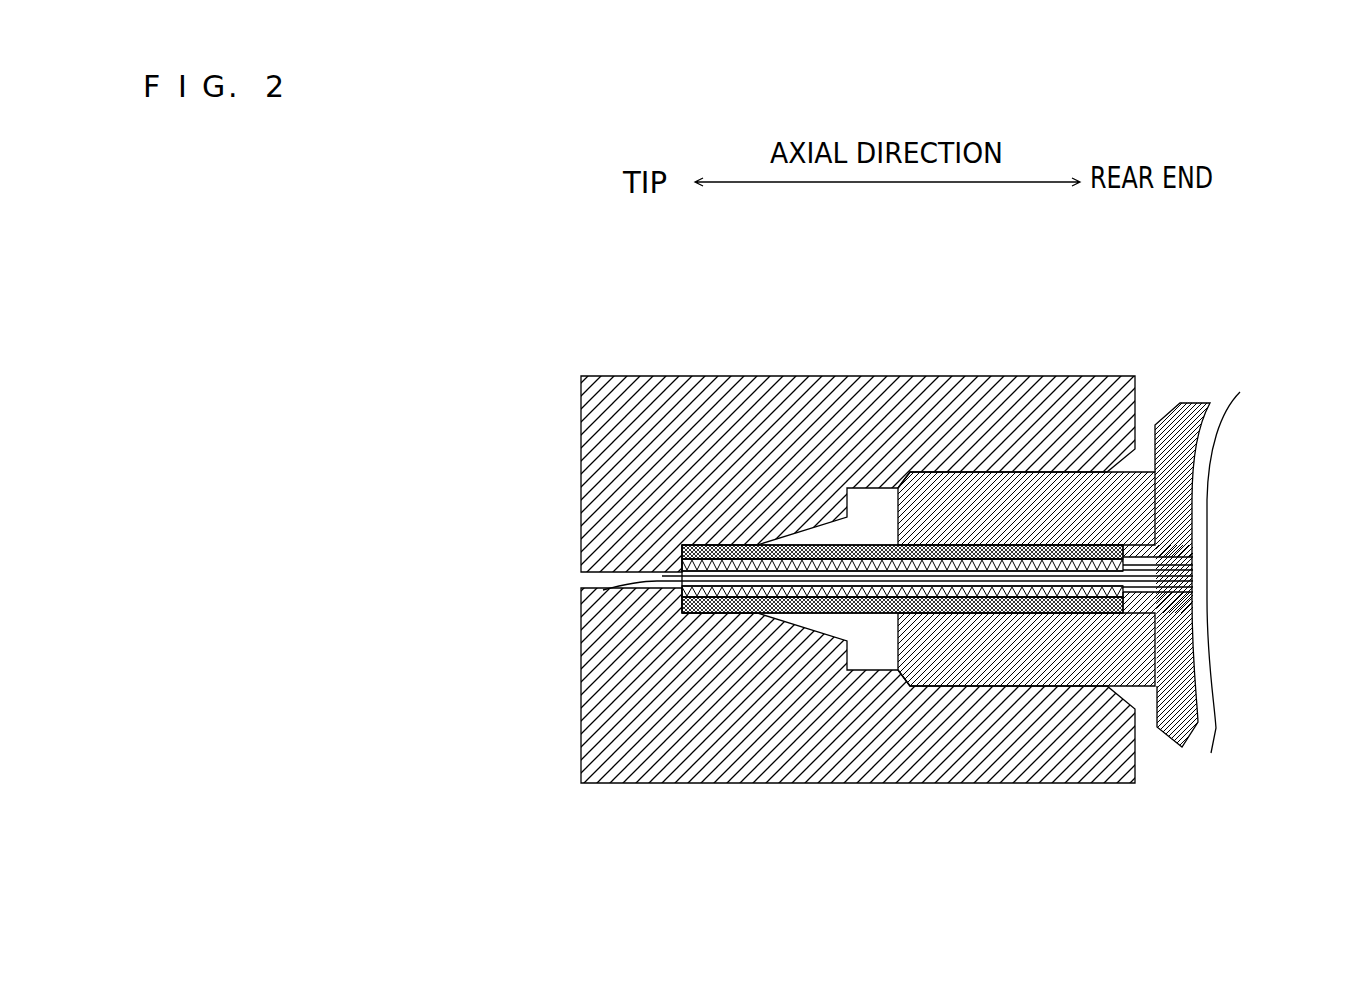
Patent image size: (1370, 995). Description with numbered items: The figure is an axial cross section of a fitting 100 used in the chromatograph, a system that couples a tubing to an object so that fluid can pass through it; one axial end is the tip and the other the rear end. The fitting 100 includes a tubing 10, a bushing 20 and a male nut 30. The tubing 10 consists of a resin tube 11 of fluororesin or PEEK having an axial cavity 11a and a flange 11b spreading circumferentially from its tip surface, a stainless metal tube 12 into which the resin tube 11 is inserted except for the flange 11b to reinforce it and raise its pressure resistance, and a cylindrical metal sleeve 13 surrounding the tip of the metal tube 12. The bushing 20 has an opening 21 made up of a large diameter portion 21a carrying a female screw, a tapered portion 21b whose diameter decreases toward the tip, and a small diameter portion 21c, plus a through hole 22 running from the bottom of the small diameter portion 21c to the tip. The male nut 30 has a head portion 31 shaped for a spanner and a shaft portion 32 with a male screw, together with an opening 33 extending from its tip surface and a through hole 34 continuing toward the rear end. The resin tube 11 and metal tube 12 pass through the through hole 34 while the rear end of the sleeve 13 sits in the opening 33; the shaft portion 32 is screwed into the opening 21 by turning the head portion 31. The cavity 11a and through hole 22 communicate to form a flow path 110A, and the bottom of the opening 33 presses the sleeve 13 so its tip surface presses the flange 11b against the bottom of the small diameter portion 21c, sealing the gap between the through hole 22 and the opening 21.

The fitting 100 is at (1317, 198).
The tubing 10 is at (813, 756).
The resin tube 11 is at (813, 730).
The cavity 11a is at (601, 595).
The flange 11b is at (673, 609).
The metal tube 12 is at (780, 606).
The sleeve 13 is at (830, 600).
The bushing 20 is at (952, 402).
The opening 21 is at (884, 416).
The large diameter portion 21a is at (878, 411).
The tapered portion 21b is at (785, 535).
The small diameter portion 21c is at (707, 548).
The through hole 22 is at (600, 582).
The male nut 30 is at (1069, 544).
The head portion 31 is at (1182, 403).
The shaft portion 32 is at (1070, 503).
The opening 33 is at (995, 600).
The through hole 34 is at (1187, 750).
The flow path 110A is at (488, 553).